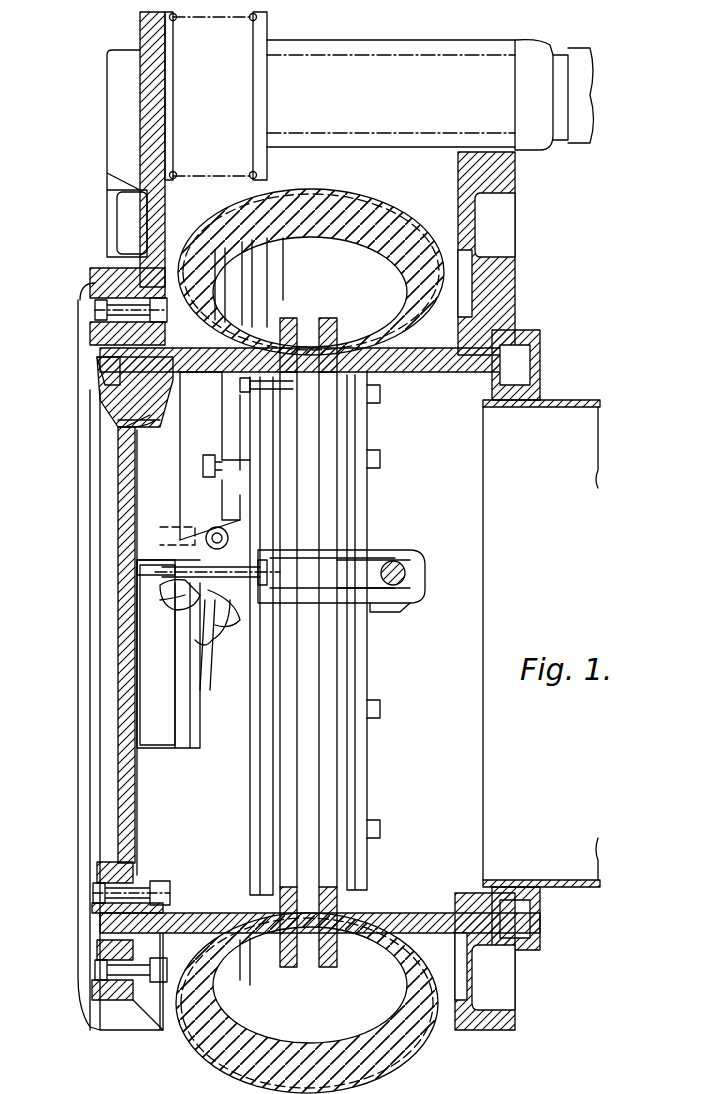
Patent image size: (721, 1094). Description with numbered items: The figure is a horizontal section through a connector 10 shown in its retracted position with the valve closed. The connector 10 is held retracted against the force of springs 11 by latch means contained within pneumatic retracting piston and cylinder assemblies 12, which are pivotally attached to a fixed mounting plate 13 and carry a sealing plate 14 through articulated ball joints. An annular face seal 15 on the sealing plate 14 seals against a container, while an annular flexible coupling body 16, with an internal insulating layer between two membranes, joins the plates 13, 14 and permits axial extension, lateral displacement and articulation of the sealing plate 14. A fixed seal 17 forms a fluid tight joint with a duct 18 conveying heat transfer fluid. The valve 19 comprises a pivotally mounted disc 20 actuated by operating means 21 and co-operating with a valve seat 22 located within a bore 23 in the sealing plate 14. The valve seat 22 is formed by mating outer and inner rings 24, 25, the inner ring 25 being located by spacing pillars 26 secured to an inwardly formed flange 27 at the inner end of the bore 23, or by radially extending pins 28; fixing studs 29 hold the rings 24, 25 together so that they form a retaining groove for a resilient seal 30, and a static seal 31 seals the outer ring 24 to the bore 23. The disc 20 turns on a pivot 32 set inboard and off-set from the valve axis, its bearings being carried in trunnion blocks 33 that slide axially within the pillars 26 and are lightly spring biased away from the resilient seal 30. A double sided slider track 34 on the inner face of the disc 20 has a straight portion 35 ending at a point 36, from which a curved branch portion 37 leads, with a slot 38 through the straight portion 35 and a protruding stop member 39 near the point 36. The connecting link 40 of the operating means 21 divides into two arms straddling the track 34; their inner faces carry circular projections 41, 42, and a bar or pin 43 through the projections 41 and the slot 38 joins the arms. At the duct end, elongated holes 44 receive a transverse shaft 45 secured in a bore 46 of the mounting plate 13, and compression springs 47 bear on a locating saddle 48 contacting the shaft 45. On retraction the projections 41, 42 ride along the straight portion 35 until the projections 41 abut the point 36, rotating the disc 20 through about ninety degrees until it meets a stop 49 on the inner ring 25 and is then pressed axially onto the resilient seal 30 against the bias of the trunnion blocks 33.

The connector 10 is at (98, 152).
The springs 11 is at (247, 17).
The pneumatic retracting piston and cylinder assemblies 12 is at (405, 108).
The mounting plate 13 is at (473, 212).
The sealing plate 14 is at (150, 202).
The annular face seal 15 is at (82, 295).
The annular flexible coupling body 16 is at (412, 174).
The fixed seal 17 is at (542, 377).
The duct 18 is at (542, 407).
The valve 19 is at (82, 535).
The disc 20 is at (118, 467).
The operating means 21 is at (327, 522).
The valve seat 22 is at (85, 405).
The bore 23 is at (250, 395).
The outer ring 24 is at (100, 385).
The inner ring 25 is at (215, 414).
The spacing pillars 26 is at (222, 452).
The inwardly formed flange 27 is at (246, 415).
The radially extending pins 28 is at (225, 380).
The fixing studs 29 is at (110, 893).
The resilient seal 30 is at (118, 430).
The static seal 31 is at (110, 355).
The pivot 32 is at (180, 520).
The trunnion blocks 33 is at (228, 497).
The double sided slider track 34 is at (212, 680).
The straight portion 35 is at (180, 728).
The termination point 36 is at (200, 560).
The curved branch portion 37 is at (208, 642).
The slot 38 is at (180, 688).
The stop member 39 is at (180, 583).
The connecting link 40 is at (310, 593).
The projections 41 is at (163, 567).
The projections 42 is at (220, 620).
The bar or pin 43 is at (180, 600).
The elongated holes 44 is at (405, 573).
The transverse shaft 45 is at (405, 583).
The bore 46 is at (410, 375).
The compression springs 47 is at (355, 560).
The locating saddle 48 is at (395, 605).
The stop 49 is at (150, 425).